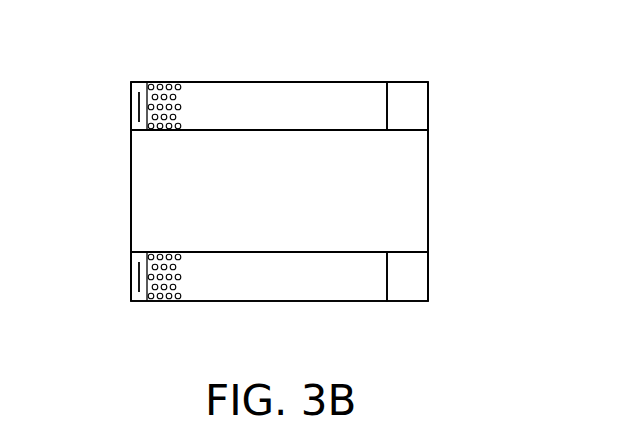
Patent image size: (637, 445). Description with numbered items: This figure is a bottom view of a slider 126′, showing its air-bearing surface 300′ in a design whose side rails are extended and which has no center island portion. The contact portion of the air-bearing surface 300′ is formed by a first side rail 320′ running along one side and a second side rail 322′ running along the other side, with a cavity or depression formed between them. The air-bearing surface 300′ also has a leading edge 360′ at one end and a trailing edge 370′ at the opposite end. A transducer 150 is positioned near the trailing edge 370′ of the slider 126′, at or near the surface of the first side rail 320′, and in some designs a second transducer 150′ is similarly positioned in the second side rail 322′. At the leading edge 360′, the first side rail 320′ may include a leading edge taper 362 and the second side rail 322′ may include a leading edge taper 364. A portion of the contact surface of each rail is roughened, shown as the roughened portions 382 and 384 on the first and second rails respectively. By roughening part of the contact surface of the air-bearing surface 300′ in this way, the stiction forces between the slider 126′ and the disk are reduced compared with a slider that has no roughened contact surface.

The slider 126′ is at (193, 82).
The transducer 150 is at (129, 116).
The second transducer 150′ is at (129, 280).
The air-bearing surface 300′ is at (263, 142).
The first side rail 320′ is at (353, 90).
The second side rail 322′ is at (366, 298).
The leading edge 360′ is at (430, 207).
The leading edge taper 362 is at (420, 103).
The leading edge taper 364 is at (420, 278).
The trailing edge 370′ is at (130, 209).
The roughened portion 382 is at (164, 83).
The roughened portion 384 is at (164, 299).